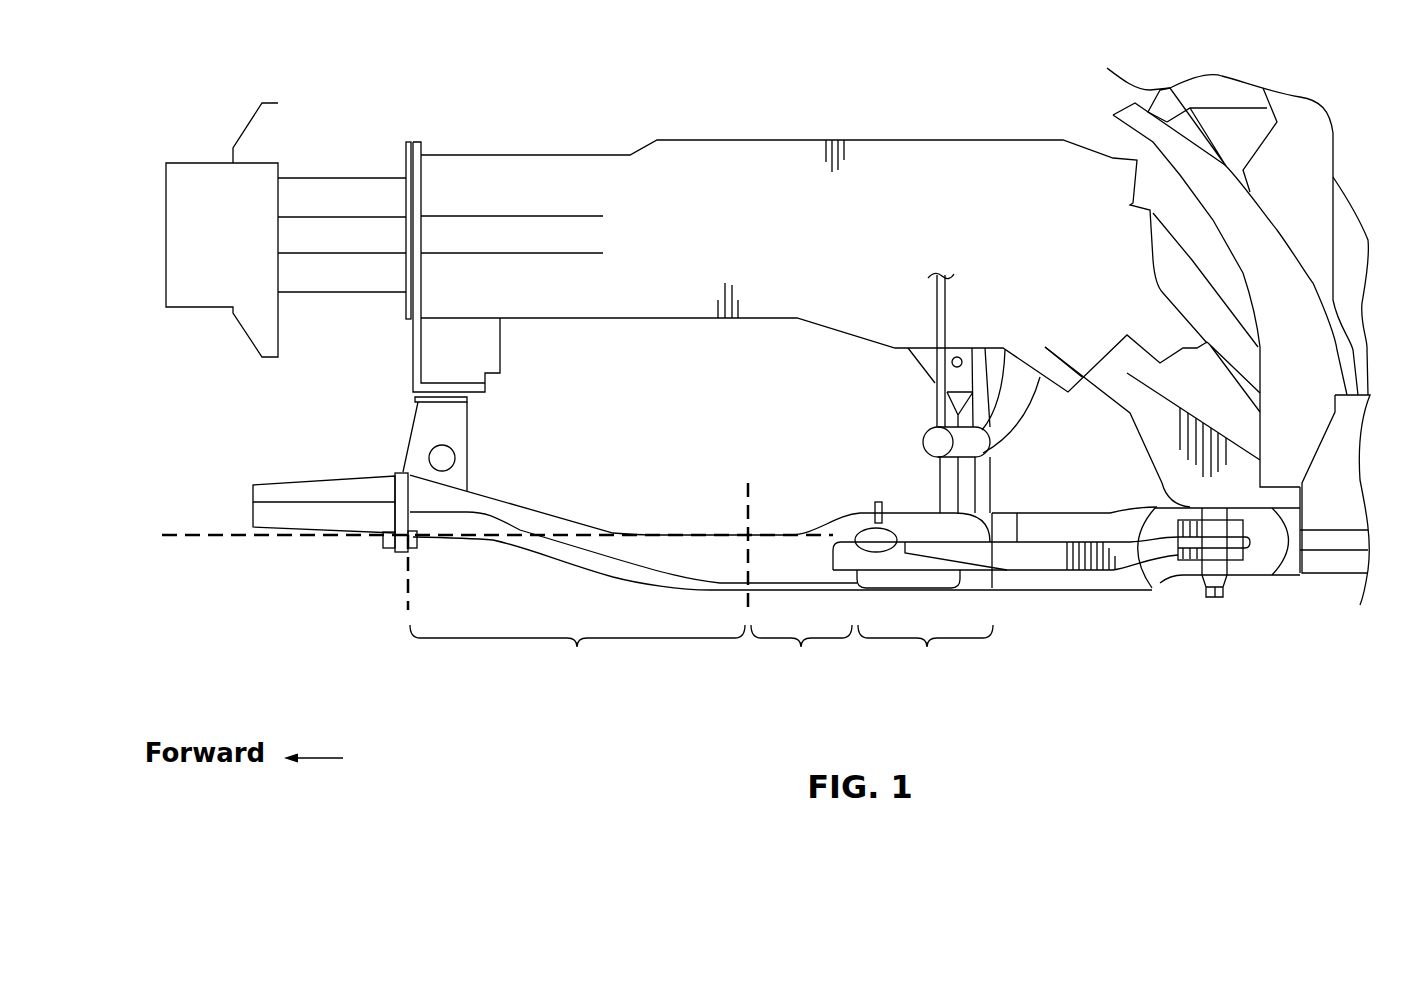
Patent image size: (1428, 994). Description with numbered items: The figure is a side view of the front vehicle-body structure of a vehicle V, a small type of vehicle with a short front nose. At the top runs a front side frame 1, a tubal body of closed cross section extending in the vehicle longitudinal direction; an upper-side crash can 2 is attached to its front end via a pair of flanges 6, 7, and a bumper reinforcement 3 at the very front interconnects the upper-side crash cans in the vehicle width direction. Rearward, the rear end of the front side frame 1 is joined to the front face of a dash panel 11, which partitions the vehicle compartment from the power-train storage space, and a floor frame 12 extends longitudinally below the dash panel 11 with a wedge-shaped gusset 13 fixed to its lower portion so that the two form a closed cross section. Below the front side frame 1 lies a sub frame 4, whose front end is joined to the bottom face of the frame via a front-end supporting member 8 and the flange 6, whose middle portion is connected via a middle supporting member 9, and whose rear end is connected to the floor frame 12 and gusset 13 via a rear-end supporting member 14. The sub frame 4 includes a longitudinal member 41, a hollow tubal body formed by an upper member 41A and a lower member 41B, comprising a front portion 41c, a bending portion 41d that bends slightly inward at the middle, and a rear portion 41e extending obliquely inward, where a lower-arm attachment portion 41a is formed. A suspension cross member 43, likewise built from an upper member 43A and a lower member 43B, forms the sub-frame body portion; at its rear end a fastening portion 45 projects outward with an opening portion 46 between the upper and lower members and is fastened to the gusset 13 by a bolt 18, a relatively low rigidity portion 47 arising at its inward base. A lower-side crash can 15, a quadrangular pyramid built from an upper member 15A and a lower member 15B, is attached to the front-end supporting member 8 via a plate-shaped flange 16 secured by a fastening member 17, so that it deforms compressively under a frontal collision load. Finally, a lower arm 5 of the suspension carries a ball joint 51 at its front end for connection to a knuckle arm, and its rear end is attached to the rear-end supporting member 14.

The front side frame 1 is at (722, 150).
The upper-side crash can 2 is at (318, 190).
The bumper reinforcement 3 is at (191, 180).
The sub frame 4 is at (997, 600).
The lower arm 5 is at (1091, 570).
The flange 6 is at (420, 141).
The flange 7 is at (408, 143).
The front-end supporting member 8 is at (422, 428).
The middle supporting member 9 is at (988, 470).
The dash panel 11 is at (1177, 268).
The floor frame 12 is at (1122, 357).
The gusset 13 is at (1155, 425).
The rear-end supporting member 14 is at (1190, 560).
The lower-side crash can 15 is at (252, 490).
The upper member 15A is at (327, 490).
The lower member 15B is at (305, 520).
The flange 16 is at (397, 513).
The fastening member 17 is at (382, 540).
The bolt 18 is at (1203, 590).
The longitudinal member 41 is at (704, 534).
The upper member 41A is at (550, 522).
The lower member 41B is at (575, 557).
The lower-arm attachment portion 41a is at (903, 523).
The front portion 41c is at (577, 655).
The bending portion 41d is at (801, 655).
The rear portion 41e is at (925, 655).
The suspension cross member 43 is at (1063, 587).
The upper member 43A is at (1068, 513).
The lower member 43B is at (1043, 583).
The fastening portion 45 is at (1237, 573).
The opening portion 46 is at (1263, 557).
The low rigidity portion 47 is at (1157, 505).
The ball joint 51 is at (880, 500).
The vehicle V is at (860, 113).